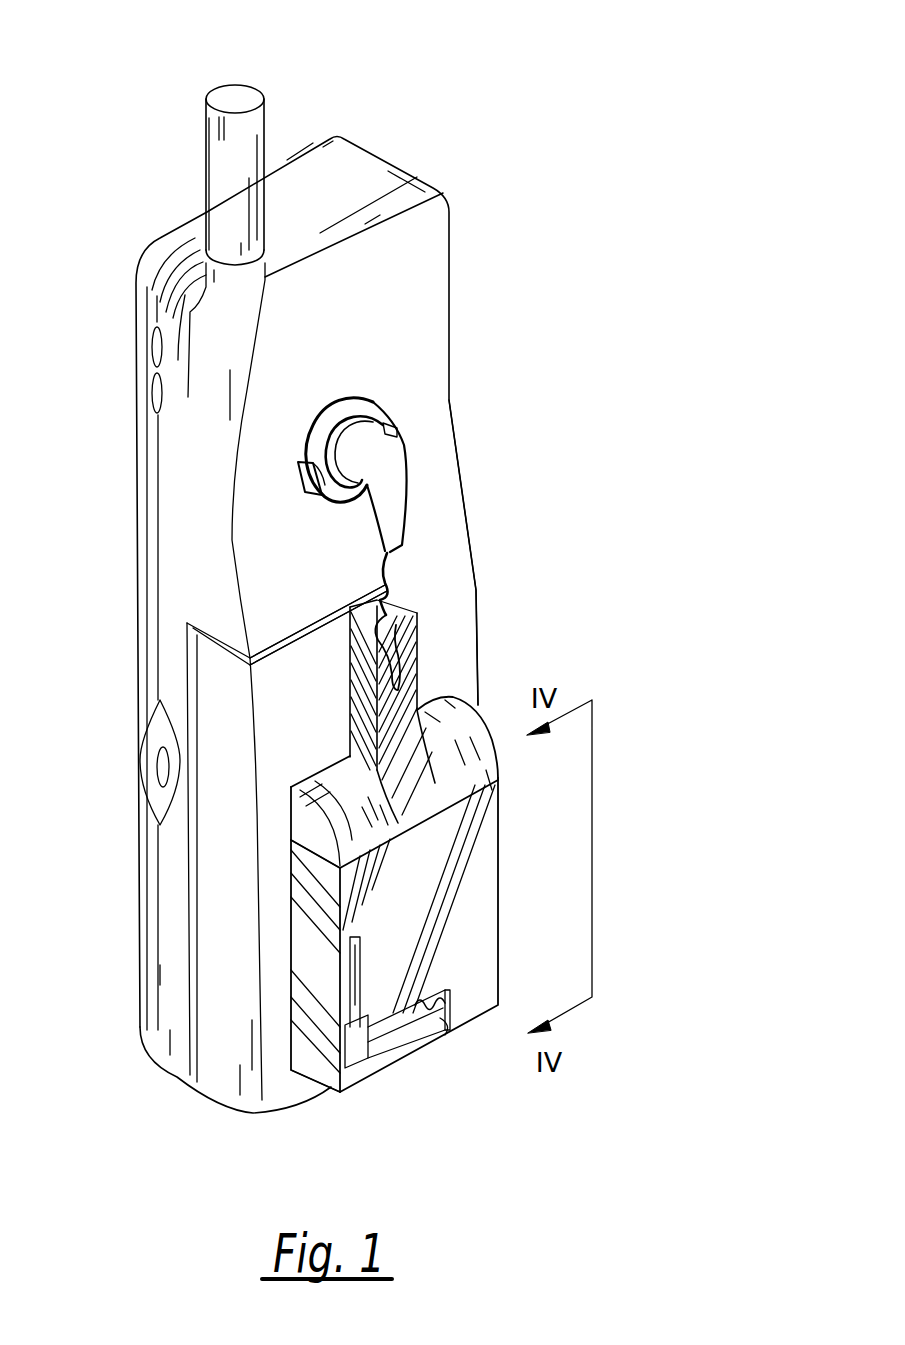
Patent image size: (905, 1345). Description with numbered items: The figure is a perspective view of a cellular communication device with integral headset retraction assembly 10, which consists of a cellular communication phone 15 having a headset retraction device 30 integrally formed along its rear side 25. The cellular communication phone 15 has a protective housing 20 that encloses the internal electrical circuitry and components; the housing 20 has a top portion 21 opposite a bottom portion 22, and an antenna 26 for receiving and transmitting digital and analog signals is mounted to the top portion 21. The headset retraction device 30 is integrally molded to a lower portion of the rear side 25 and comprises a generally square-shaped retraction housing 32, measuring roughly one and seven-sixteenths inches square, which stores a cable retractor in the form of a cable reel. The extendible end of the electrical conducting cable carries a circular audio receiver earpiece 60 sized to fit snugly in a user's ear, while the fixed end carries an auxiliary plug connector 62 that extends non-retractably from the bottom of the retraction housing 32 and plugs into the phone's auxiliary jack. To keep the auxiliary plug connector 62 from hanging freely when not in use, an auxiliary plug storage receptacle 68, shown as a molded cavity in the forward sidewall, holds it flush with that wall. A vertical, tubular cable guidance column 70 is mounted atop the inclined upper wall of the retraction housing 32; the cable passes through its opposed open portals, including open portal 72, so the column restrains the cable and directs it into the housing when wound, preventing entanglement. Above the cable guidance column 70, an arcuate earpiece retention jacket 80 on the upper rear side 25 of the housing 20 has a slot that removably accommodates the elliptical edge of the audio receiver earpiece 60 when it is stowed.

The cellular communication device with integral headset retraction assembly 10 is at (487, 90).
The cellular communication phone 15 is at (462, 340).
The protective housing 20 is at (450, 258).
The top portion 21 is at (152, 260).
The bottom portion 22 is at (273, 1114).
The rear side 25 is at (467, 601).
The antenna 26 is at (206, 112).
The headset retraction device 30 is at (448, 688).
The retraction housing 32 is at (307, 957).
The audio receiver earpiece 60 is at (373, 403).
The auxiliary plug connector 62 is at (365, 1055).
The auxiliary plug storage receptacle 68 is at (403, 1053).
The cable guidance column 70 is at (387, 586).
The open portal 72 is at (357, 606).
The earpiece retention jacket 80 is at (298, 482).